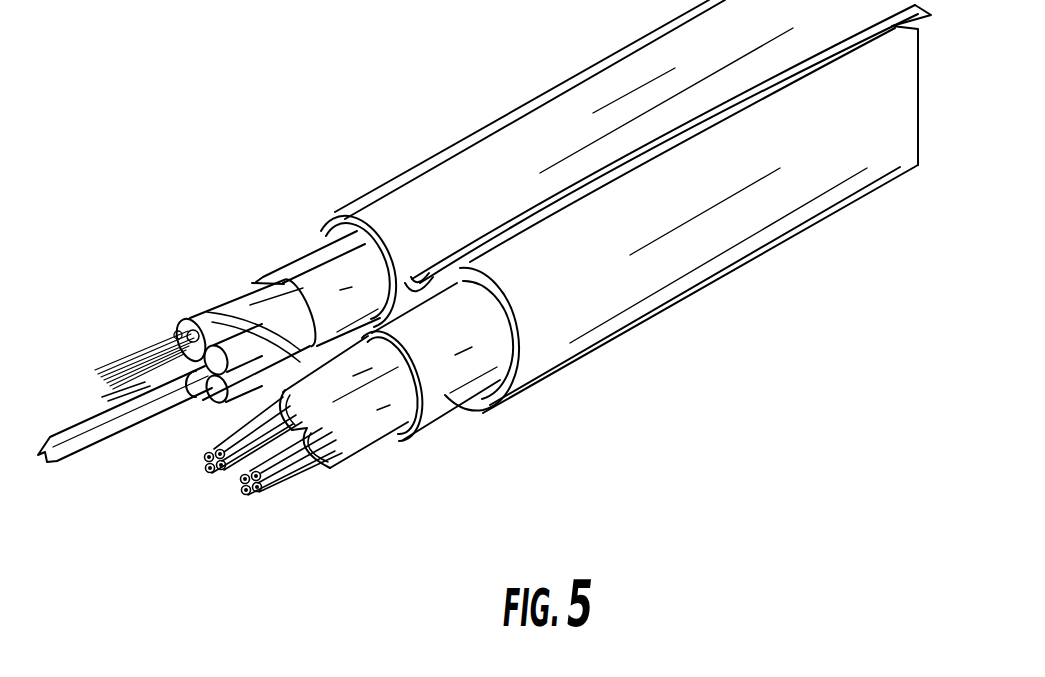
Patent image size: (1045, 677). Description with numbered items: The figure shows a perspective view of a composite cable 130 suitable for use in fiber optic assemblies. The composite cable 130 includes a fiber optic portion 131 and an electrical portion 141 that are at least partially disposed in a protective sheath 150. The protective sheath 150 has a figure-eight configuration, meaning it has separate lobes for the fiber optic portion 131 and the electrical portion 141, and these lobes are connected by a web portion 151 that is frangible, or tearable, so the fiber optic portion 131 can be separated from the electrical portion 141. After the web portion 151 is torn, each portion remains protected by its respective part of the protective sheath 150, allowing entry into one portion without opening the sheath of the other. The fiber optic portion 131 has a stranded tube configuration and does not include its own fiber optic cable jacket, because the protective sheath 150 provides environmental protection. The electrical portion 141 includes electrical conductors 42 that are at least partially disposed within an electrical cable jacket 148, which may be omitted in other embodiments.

The composite cable 130 is at (484, 299).
The fiber optic portion 131 is at (286, 244).
The electrical portion 141 is at (433, 428).
The electrical conductors 42 is at (220, 473).
The electrical cable jacket 148 is at (465, 403).
The protective sheath 150 is at (612, 343).
The web portion 151 is at (414, 296).